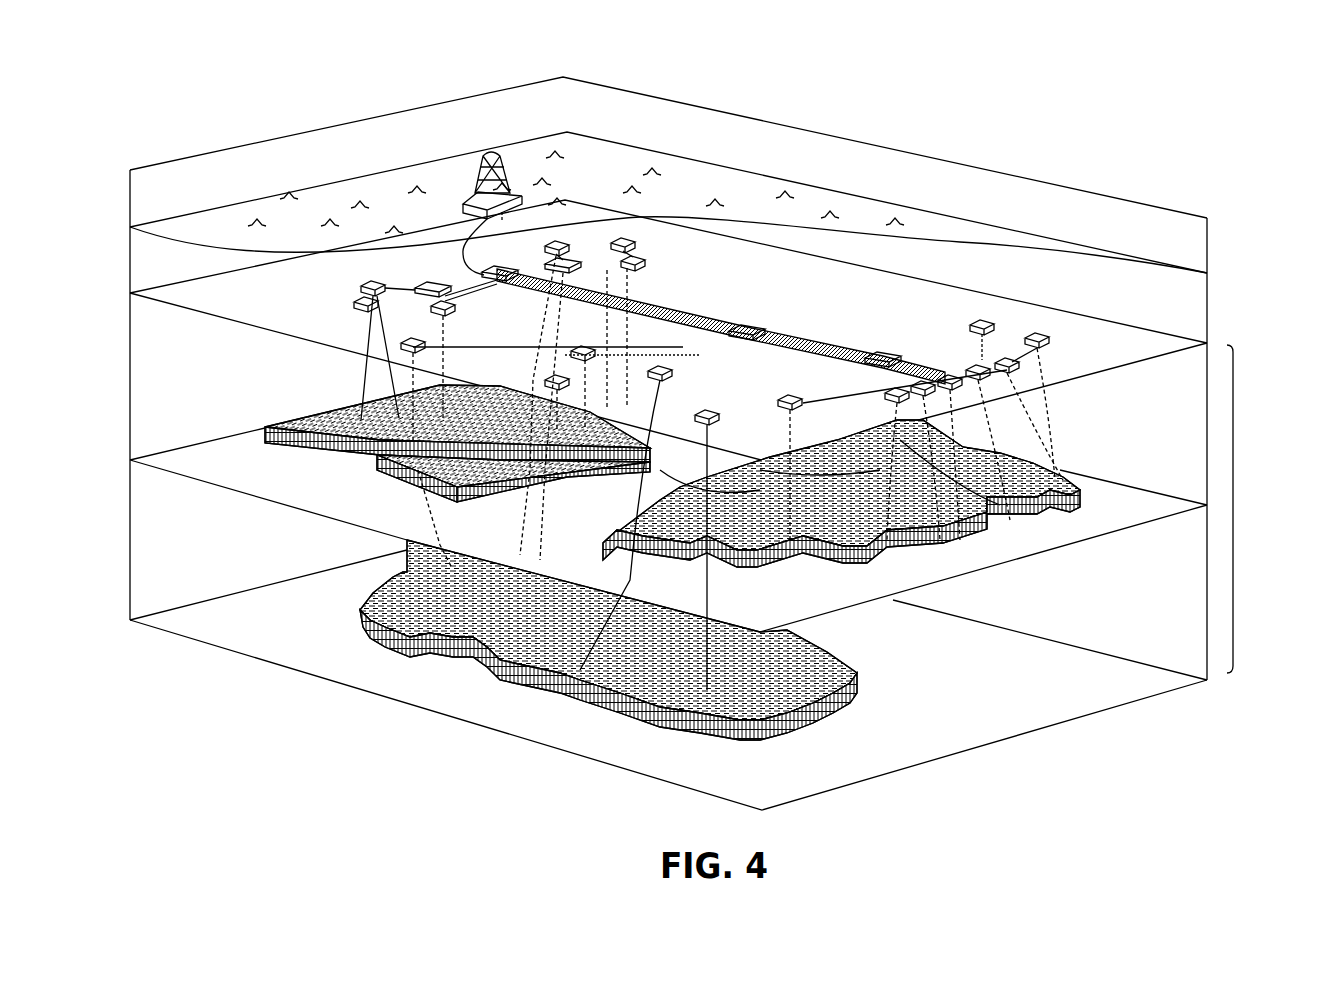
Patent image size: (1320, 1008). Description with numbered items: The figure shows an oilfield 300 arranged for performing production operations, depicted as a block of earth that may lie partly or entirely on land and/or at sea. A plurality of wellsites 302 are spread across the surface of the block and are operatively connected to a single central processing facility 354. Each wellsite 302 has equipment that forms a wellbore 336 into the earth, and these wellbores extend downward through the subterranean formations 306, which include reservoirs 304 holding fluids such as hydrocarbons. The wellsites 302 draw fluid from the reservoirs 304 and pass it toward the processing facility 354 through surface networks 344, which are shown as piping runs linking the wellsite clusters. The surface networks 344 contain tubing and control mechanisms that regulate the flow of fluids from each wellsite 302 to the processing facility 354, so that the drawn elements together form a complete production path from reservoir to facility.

The oilfield 300 is at (178, 82).
The wellsite 302 is at (797, 385).
The reservoir 304 is at (933, 575).
The subterranean formation 306 is at (1233, 490).
The wellbore 336 is at (1018, 449).
The surface network 344 is at (405, 310).
The central processing facility 354 is at (470, 163).